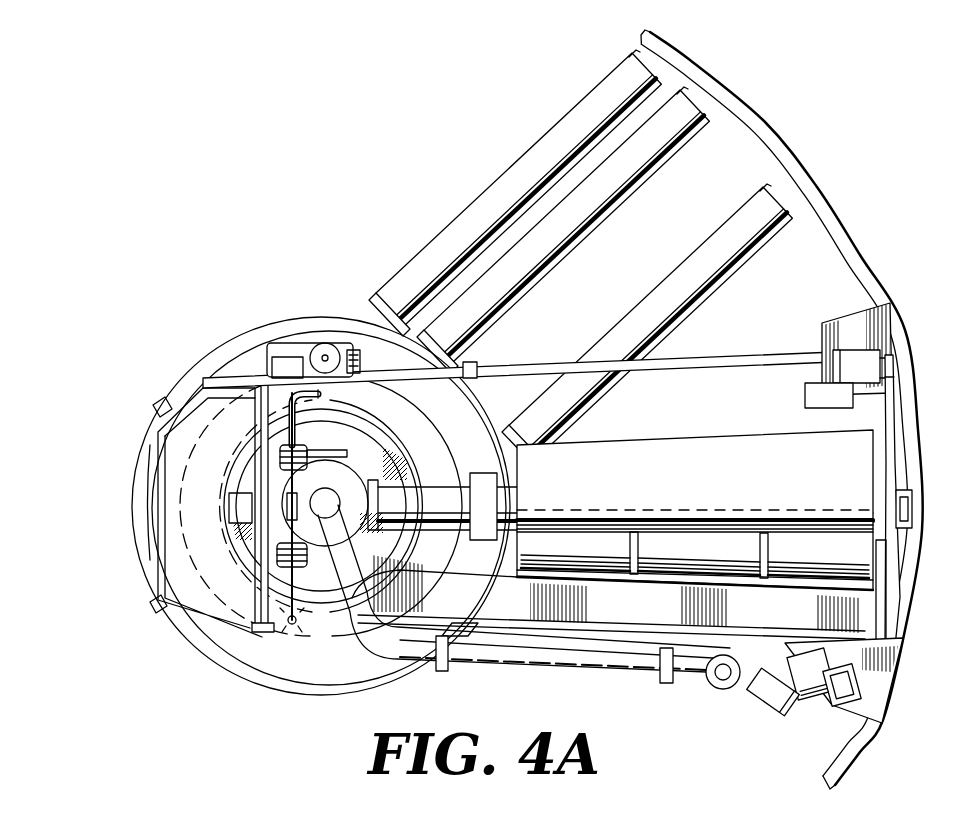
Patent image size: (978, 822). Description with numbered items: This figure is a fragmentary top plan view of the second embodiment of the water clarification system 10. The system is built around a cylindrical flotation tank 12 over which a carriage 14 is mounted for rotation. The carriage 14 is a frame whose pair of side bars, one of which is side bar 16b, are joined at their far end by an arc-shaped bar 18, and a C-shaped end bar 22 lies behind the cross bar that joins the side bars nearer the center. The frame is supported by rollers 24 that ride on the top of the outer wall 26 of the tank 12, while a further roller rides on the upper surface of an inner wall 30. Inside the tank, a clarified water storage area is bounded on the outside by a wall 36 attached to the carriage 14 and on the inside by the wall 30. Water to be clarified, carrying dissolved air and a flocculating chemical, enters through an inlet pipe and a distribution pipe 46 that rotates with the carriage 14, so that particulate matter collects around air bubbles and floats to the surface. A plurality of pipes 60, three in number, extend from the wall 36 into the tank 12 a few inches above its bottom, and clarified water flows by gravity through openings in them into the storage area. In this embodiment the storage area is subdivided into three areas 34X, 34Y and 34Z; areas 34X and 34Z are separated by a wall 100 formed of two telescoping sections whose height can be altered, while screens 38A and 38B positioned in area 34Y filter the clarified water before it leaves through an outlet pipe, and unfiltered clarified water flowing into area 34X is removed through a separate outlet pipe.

The apparatus 10 is at (814, 149).
The cylindrical flotation tank 12 is at (820, 267).
The carriage 14 is at (742, 341).
The side bar 16b is at (588, 648).
The arc-shaped bar 18 is at (873, 633).
The C-shaped end bar 22 is at (158, 481).
The rollers 24 is at (905, 532).
The outer wall 26 is at (903, 468).
The inner wall 30 is at (247, 470).
The clarified water storage subarea 34X is at (198, 597).
The clarified water storage subarea 34Y is at (234, 589).
The clarified water storage subarea 34Z is at (274, 589).
The wall 36 is at (214, 352).
The screen 38A is at (190, 588).
The screen 38B is at (198, 565).
The distribution pipe 46 is at (608, 597).
The pipes 60 is at (585, 233).
The wall 100 is at (216, 522).